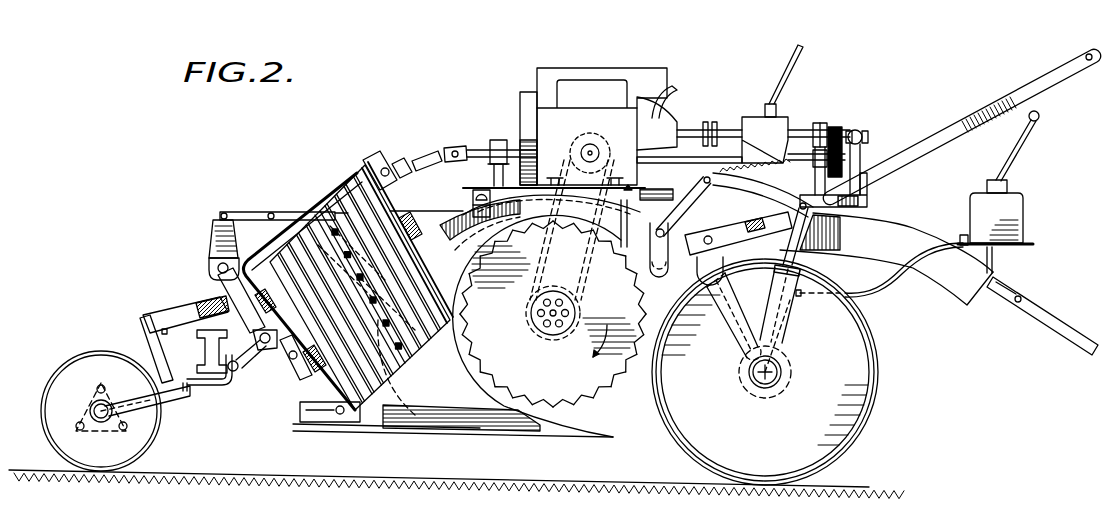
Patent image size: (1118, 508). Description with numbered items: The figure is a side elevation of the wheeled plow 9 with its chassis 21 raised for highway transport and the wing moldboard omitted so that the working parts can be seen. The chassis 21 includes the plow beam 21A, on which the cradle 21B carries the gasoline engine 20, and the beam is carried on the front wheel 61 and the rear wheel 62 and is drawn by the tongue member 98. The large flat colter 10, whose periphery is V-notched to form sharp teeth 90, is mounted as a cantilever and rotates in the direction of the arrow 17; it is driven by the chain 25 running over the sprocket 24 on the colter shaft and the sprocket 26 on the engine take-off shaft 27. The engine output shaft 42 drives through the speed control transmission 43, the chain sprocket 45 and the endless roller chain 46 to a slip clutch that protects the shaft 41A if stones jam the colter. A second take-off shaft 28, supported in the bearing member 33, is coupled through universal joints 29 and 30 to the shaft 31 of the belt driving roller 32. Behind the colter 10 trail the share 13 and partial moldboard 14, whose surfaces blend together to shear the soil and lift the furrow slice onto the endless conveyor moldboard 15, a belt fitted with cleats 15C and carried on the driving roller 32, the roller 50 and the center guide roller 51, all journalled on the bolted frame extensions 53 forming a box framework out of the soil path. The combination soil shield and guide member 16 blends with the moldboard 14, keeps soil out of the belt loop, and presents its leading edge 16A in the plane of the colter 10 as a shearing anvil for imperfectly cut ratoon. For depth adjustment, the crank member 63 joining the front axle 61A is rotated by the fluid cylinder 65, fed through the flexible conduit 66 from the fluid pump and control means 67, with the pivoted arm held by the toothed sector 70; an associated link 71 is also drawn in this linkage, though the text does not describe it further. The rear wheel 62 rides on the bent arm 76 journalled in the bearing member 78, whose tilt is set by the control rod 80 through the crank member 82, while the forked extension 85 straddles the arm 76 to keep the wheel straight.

The plow 9 is at (866, 106).
The colter 10 is at (553, 314).
The share 13 is at (613, 437).
The partial moldboard 14 is at (459, 375).
The endless conveyor moldboard 15 is at (355, 188).
The cleats 15C is at (293, 260).
The combination soil shield and guide member 16 is at (524, 326).
The leading edge 16A is at (466, 306).
The arrow 17 is at (584, 350).
The gasoline engine 20 is at (621, 70).
The chassis 21 is at (872, 213).
The plow beam 21A is at (900, 233).
The cradle 21B is at (868, 186).
The sprocket 24 is at (555, 292).
The endless chain 25 is at (596, 262).
The sprocket 26 is at (572, 150).
The power-driven take-off shaft 27 is at (598, 144).
The power take-off shaft 28 is at (475, 148).
The universal joint 29 is at (448, 147).
The universal joint 30 is at (410, 162).
The shaft 31 is at (382, 172).
The belt driving roller 32 is at (342, 210).
The bearing member 33 is at (498, 139).
The shaft 41A is at (686, 160).
The output shaft 42 is at (690, 129).
The speed control transmission 43 is at (752, 117).
The chain sprocket 45 is at (834, 126).
The endless roller chain 46 is at (864, 135).
The roller 50 is at (468, 341).
The guide roller 51 is at (298, 392).
The bolted frame extensions 53 is at (323, 416).
The front wheel 61 is at (862, 400).
The axle 61A is at (786, 376).
The rear wheel 62 is at (73, 375).
The crank member 63 is at (731, 321).
The fluid cylinder 65 is at (786, 325).
The flexible conduit 66 is at (882, 292).
The fluid pump and control means 67 is at (802, 263).
The toothed sector 70 is at (762, 186).
The link 71 is at (806, 229).
The arm 76 is at (172, 400).
The bearing member 78 is at (202, 353).
The control rod 80 is at (292, 212).
The crank member 82 is at (210, 238).
The forked extension 85 is at (157, 364).
The teeth 90 is at (612, 385).
The tongue member 98 is at (1055, 316).